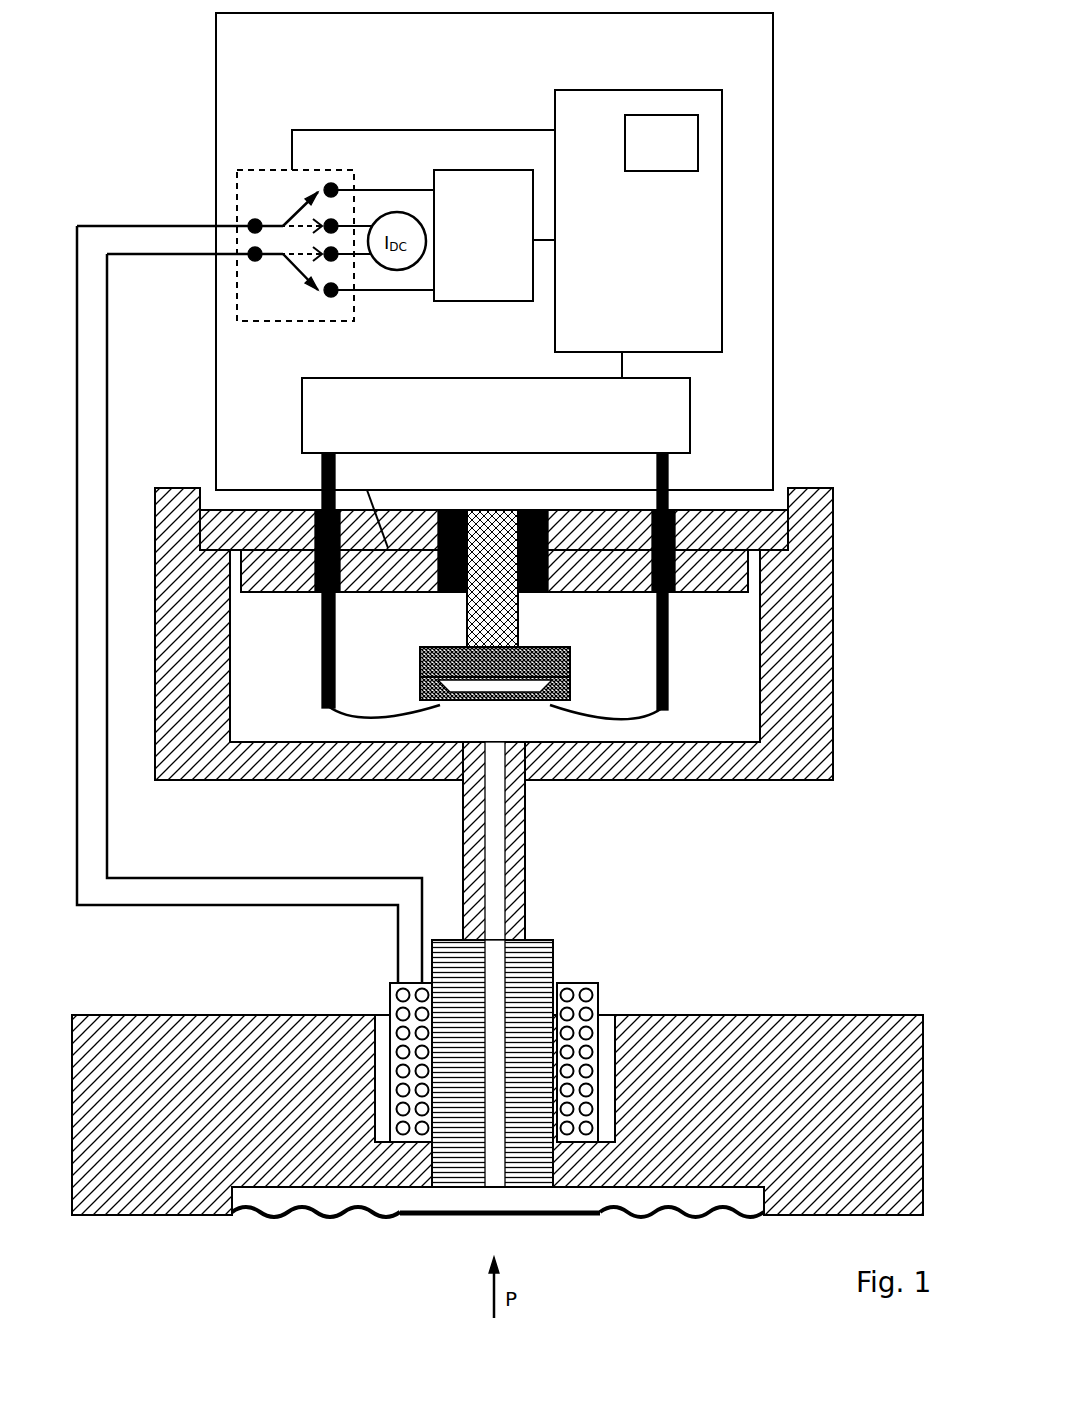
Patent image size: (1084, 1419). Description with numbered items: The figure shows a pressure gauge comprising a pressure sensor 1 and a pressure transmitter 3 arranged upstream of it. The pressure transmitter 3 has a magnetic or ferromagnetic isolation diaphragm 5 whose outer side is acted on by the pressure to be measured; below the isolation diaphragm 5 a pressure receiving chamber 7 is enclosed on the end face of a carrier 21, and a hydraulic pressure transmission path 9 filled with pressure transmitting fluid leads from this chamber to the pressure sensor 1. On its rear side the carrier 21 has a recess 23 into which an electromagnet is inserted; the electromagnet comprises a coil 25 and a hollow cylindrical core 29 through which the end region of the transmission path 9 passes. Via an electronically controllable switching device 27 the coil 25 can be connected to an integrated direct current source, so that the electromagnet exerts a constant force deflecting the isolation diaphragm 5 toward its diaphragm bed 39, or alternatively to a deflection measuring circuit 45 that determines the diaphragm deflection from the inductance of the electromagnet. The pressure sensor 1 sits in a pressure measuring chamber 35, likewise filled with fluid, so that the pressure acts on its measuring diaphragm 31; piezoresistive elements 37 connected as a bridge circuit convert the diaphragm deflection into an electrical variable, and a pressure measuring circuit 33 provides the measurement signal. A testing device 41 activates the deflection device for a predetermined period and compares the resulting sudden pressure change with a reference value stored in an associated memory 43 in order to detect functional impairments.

The pressure sensor 1 is at (577, 663).
The pressure transmitter 3 is at (719, 1013).
The isolation diaphragm 5 is at (557, 1222).
The pressure receiving chamber 7 is at (620, 1199).
The hydraulic pressure transmission path 9 is at (490, 833).
The carrier 21 is at (790, 1056).
The recess 23 is at (608, 1066).
The coil 25 is at (603, 1014).
The switching device 27 is at (237, 185).
The core 29 is at (527, 978).
The measuring diaphragm 31 is at (475, 700).
The pressure measuring circuit 33 is at (496, 415).
The pressure measuring chamber 35 is at (494, 634).
The piezoresistive elements 37 is at (590, 800).
The diaphragm bed 39 is at (415, 1187).
The testing device 41 is at (638, 221).
The memory 43 is at (661, 143).
The deflection measuring circuit 45 is at (483, 235).